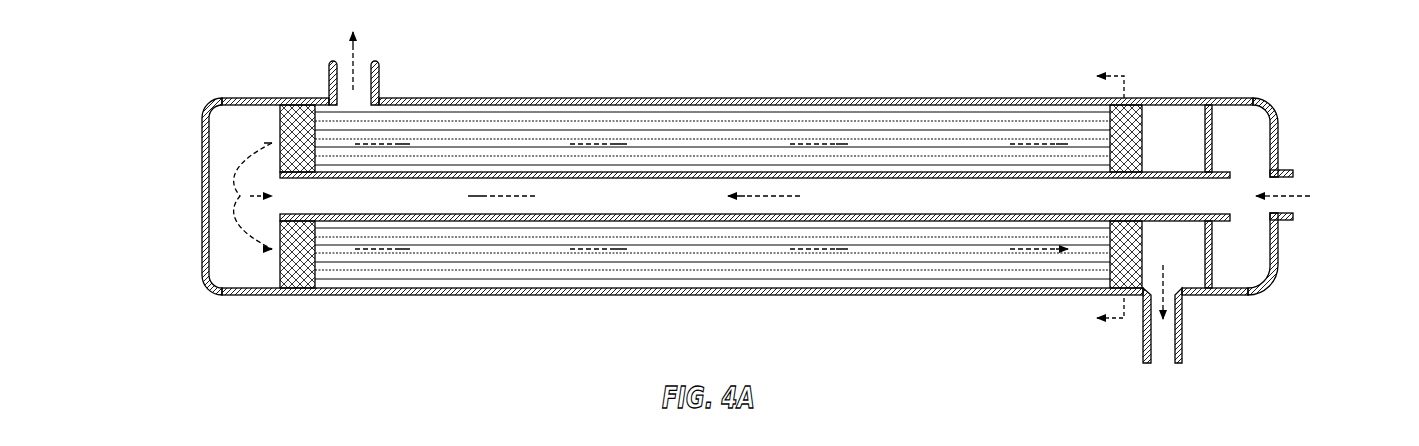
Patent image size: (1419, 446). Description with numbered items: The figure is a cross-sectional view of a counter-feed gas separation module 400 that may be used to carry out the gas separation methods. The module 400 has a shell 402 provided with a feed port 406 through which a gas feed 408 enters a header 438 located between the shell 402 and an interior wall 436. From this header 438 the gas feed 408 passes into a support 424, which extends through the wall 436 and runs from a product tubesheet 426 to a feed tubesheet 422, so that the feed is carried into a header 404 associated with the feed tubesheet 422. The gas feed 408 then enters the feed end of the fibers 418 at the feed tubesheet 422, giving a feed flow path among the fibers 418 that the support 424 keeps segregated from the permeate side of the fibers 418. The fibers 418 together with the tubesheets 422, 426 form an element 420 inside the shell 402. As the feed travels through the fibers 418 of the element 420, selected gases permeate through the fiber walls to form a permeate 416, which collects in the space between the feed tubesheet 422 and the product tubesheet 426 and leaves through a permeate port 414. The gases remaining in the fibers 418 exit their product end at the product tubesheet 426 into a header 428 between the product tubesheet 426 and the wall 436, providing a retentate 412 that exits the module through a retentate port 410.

The gas separation module 400 is at (222, 40).
The shell 402 is at (705, 98).
The header 404 is at (230, 196).
The feed port 406 is at (1280, 222).
The gas feed 408 is at (1315, 196).
The retentate port 410 is at (1182, 330).
The retentate 412 is at (1163, 278).
The permeate port 414 is at (381, 82).
The permeate 416 is at (352, 52).
The fibers 418 is at (545, 127).
The element 420 is at (278, 125).
The feed tubesheet 422 is at (280, 268).
The support 424 is at (1000, 178).
The product tubesheet 426 is at (1143, 118).
The header 428 is at (1180, 163).
The interior wall 436 is at (1212, 125).
The header 438 is at (1242, 260).